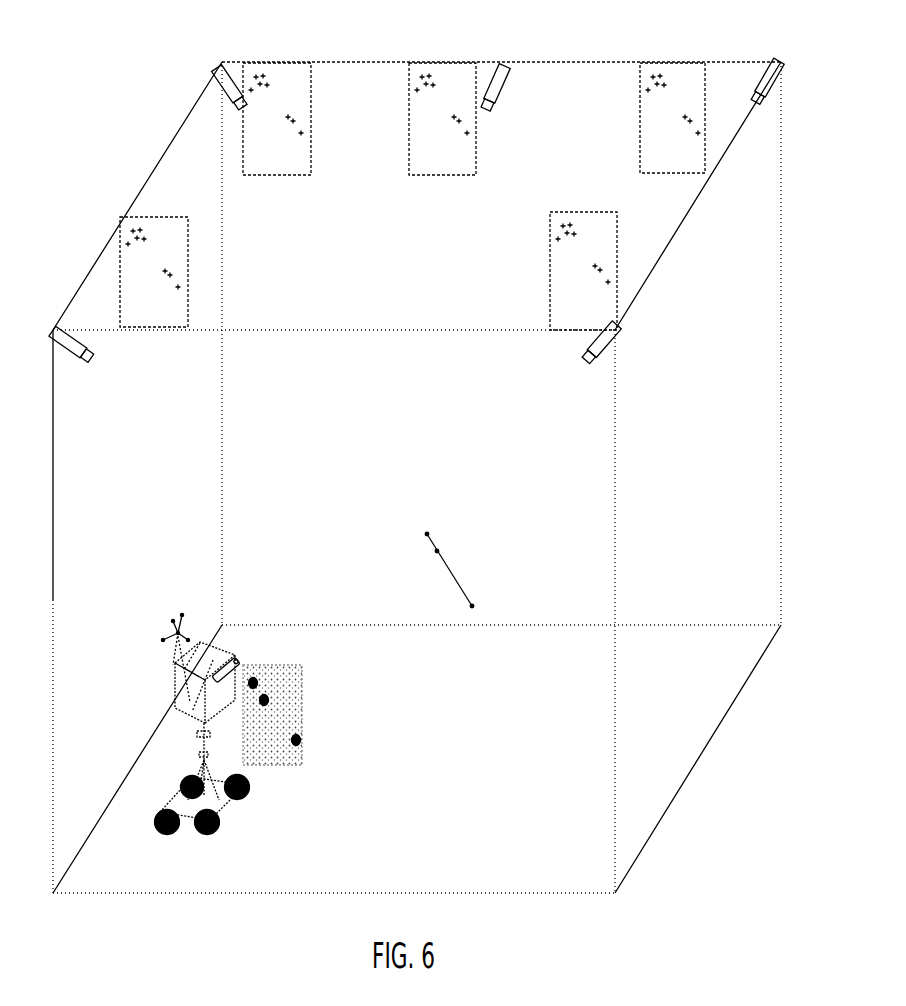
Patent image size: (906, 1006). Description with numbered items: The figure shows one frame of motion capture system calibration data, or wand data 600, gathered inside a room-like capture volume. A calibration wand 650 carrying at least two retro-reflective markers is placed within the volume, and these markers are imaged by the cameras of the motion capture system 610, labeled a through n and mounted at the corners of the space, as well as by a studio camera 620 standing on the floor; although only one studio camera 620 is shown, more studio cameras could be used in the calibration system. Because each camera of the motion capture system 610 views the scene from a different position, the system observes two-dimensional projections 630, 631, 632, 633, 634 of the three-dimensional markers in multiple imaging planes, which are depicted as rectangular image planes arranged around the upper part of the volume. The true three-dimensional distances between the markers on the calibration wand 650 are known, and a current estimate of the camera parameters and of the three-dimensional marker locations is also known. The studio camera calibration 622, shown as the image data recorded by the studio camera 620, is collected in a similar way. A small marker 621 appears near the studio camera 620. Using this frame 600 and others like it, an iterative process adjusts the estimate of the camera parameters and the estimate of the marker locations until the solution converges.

The frame of motion capture system calibration data 600 is at (733, 740).
The motion capture system 610 is at (755, 124).
The studio camera 620 is at (169, 686).
The marker 621 is at (165, 617).
The studio camera calibration 622 is at (311, 761).
The 2D projection 630 is at (120, 262).
The 2D projection 631 is at (265, 178).
The 2D projection 632 is at (408, 88).
The 2D projection 633 is at (548, 323).
The 2D projection 634 is at (638, 117).
The calibration wand 650 is at (454, 563).